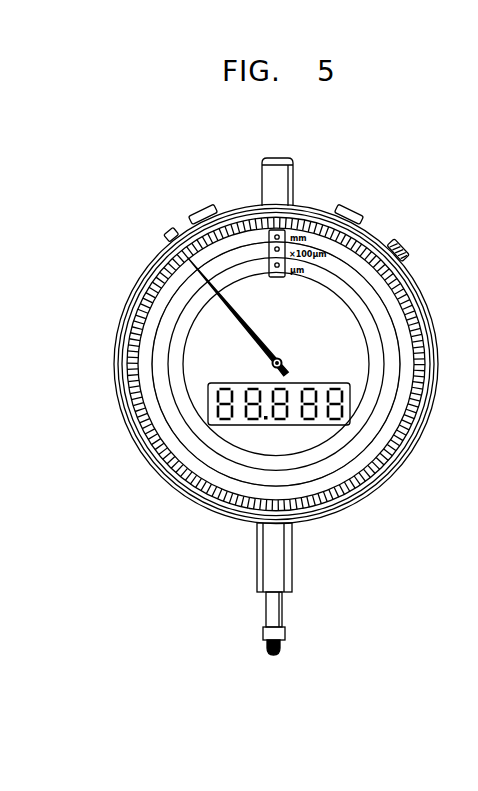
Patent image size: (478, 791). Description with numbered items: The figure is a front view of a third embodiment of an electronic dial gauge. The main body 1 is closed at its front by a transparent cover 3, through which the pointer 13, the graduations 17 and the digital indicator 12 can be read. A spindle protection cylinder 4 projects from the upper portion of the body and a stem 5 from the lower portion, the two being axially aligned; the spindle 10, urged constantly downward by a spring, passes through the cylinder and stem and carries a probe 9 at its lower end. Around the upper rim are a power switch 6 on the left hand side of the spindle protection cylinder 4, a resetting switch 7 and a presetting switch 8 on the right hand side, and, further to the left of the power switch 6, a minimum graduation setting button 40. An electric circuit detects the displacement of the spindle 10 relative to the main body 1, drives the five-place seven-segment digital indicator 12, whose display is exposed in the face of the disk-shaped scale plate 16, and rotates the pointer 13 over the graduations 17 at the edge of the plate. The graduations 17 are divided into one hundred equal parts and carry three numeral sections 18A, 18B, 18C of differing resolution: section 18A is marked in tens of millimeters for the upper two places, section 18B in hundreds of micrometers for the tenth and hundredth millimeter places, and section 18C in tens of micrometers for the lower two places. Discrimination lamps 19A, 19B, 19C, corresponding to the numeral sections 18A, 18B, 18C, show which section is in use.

The main body 1 is at (118, 301).
The cover 3 is at (147, 370).
The spindle protection cylinder 4 is at (294, 178).
The stem 5 is at (292, 573).
The power switch 6 is at (209, 207).
The resetting switch 7 is at (351, 212).
The presetting switch 8 is at (402, 250).
The probe 9 is at (282, 648).
The spindle 10 is at (282, 609).
The digital indicator 12 is at (177, 428).
The pointer 13 is at (208, 303).
The scale plate 16 is at (247, 488).
The graduations 17 is at (367, 491).
The numeral section 18A is at (370, 276).
The numeral section 18B is at (372, 299).
The numeral section 18C is at (365, 319).
The discrimination lamp 19A is at (286, 232).
The discrimination lamp 19B is at (270, 240).
The discrimination lamp 19C is at (268, 263).
The minimum graduation setting button 40 is at (172, 236).